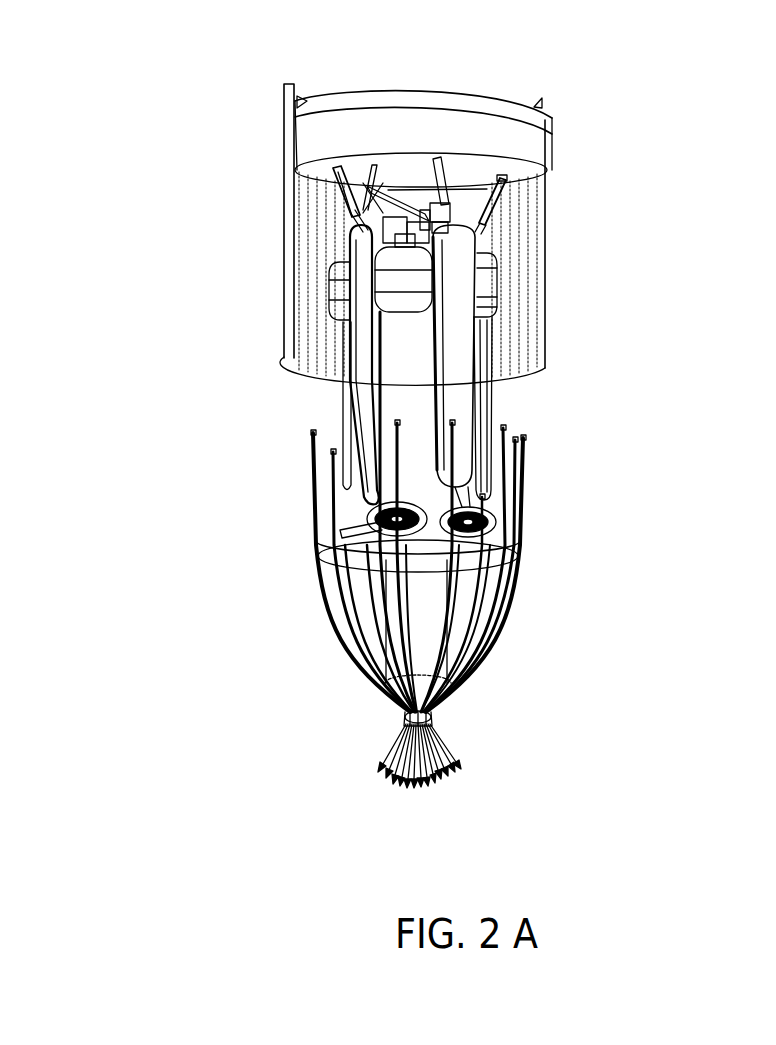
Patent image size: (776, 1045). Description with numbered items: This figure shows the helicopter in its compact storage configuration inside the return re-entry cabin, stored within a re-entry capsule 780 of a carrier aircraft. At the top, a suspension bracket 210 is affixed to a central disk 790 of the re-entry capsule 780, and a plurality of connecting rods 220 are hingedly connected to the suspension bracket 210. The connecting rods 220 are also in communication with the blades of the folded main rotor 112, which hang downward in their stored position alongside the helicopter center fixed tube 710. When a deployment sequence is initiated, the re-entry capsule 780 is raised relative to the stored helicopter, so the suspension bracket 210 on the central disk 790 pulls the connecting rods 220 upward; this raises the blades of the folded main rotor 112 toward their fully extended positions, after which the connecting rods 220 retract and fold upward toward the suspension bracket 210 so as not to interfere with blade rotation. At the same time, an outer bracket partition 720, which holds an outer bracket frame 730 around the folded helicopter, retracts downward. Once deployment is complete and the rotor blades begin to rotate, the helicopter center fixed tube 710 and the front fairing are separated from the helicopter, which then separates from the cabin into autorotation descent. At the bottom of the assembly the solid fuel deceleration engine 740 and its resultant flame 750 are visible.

The central disk 790 is at (472, 96).
The re-entry capsule 780 is at (285, 358).
The suspension bracket 210 is at (503, 175).
The connecting rods 220 is at (500, 198).
The helicopter center fixed tube 710 is at (413, 378).
The main rotor 112 is at (463, 327).
The outer bracket partition 720 is at (330, 569).
The outer bracket frame 730 is at (522, 527).
The solid fuel deceleration engine 740 is at (407, 720).
The flame 750 is at (445, 748).